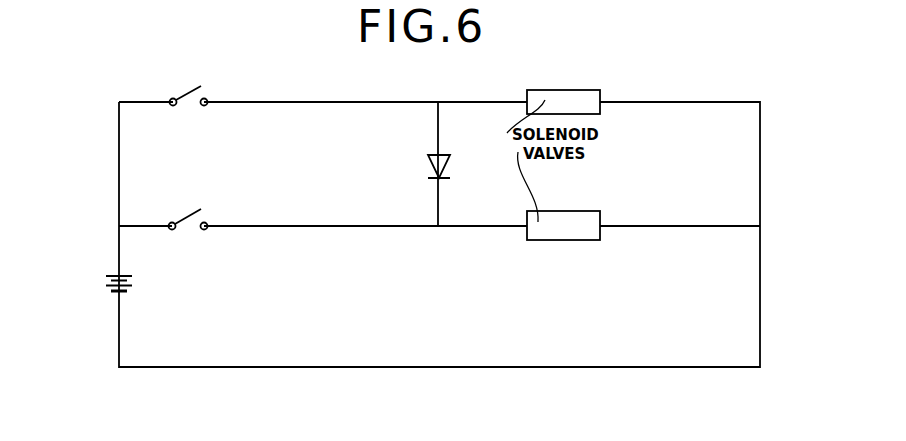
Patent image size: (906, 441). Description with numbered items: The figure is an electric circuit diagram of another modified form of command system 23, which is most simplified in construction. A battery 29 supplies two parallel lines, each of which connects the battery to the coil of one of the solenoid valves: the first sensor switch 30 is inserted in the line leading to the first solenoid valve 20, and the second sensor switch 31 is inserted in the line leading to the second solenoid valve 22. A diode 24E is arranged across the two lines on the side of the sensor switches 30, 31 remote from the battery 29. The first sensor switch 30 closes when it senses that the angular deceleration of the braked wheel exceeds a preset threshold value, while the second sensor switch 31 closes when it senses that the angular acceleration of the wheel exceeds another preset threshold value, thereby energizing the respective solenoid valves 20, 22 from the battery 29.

The first solenoid valve 20 is at (553, 88).
The second solenoid valve 22 is at (553, 210).
The command system 23 is at (641, 88).
The diode 24E is at (450, 170).
The battery 29 is at (134, 280).
The first sensor switch 30 is at (181, 96).
The second sensor switch 31 is at (181, 219).